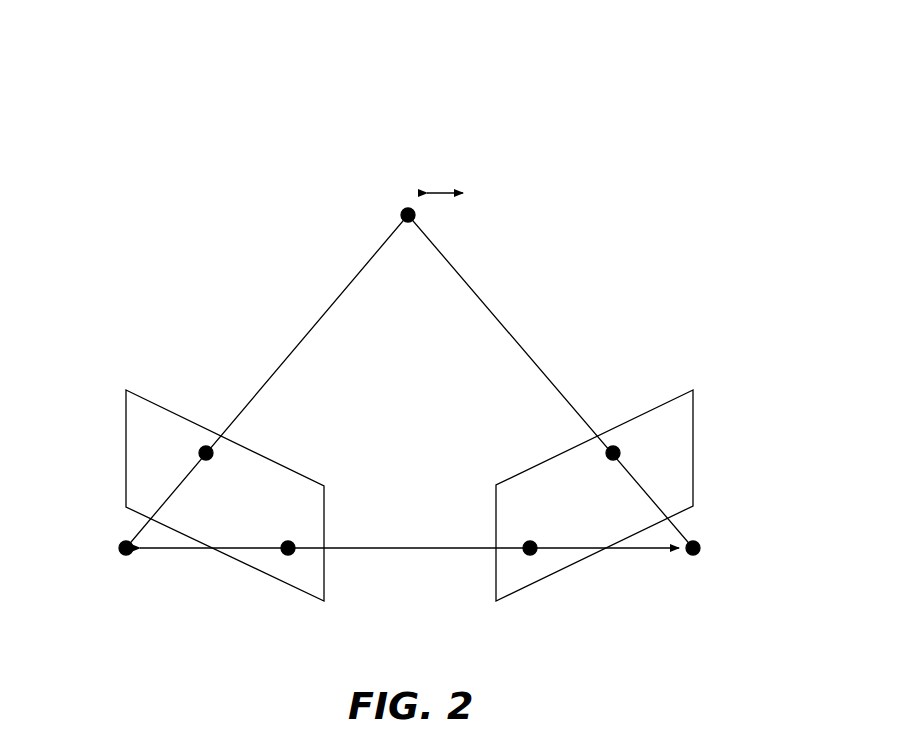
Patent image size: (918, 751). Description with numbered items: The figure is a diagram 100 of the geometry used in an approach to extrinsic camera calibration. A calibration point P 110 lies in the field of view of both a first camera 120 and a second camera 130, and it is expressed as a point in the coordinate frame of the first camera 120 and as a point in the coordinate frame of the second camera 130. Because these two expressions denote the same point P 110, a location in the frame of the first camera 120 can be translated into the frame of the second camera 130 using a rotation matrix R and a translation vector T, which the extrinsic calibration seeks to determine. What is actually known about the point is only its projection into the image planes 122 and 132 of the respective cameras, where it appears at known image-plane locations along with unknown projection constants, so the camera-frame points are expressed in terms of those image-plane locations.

The diagram 100 is at (236, 63).
The point P 110 is at (401, 212).
The first camera 120 is at (702, 546).
The image plane of first camera 122 is at (685, 405).
The second camera 130 is at (118, 546).
The image plane of second camera 132 is at (133, 405).